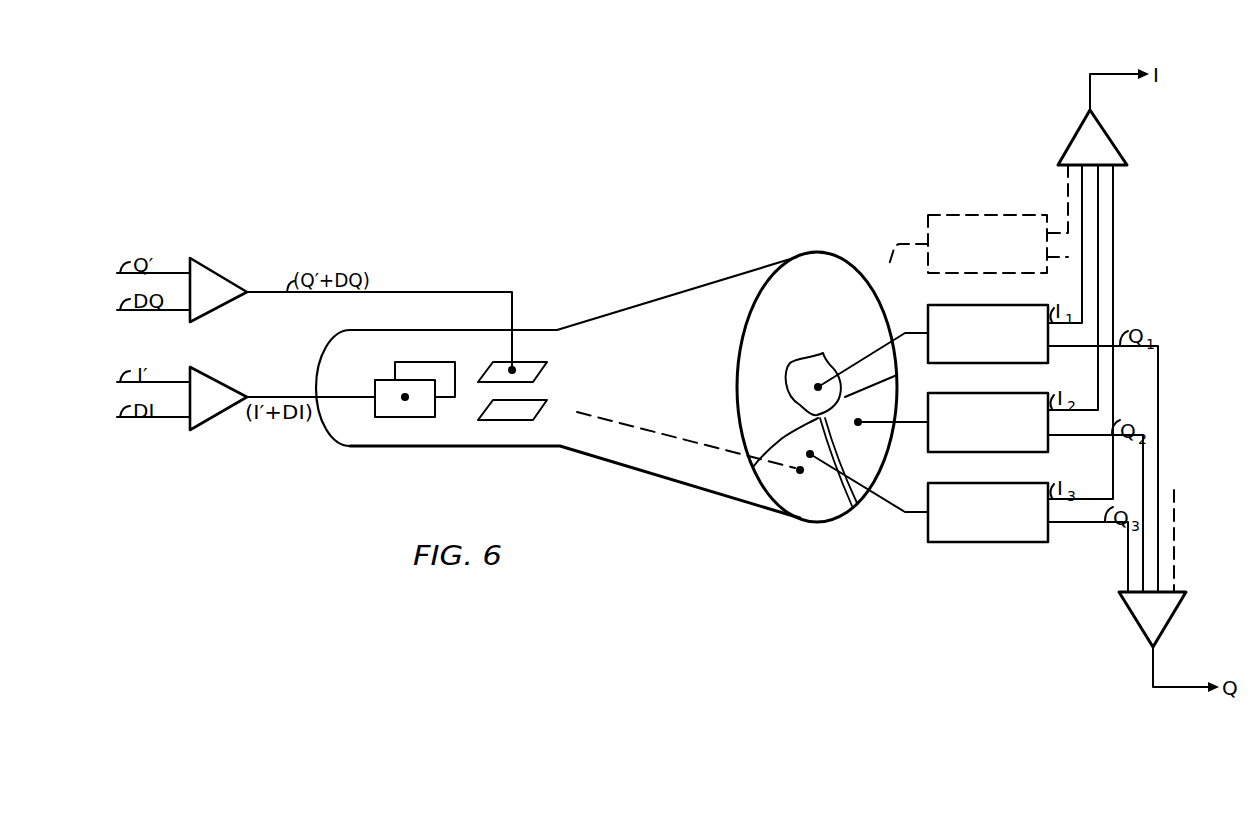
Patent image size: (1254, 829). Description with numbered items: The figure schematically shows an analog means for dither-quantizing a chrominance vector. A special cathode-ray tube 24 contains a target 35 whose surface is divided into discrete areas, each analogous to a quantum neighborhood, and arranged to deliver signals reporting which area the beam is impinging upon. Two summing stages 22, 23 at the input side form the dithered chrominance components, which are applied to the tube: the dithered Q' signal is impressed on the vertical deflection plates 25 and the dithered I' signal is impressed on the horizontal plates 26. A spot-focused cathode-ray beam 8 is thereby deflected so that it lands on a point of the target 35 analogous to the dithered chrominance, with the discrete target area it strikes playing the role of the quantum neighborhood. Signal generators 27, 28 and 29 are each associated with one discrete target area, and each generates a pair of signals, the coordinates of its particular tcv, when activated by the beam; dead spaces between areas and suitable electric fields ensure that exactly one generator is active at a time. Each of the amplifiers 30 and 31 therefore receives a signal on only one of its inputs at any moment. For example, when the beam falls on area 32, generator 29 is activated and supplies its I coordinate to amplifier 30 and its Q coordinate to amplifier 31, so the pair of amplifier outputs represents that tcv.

The cathode-ray beam 8 is at (655, 433).
The summing amplifier 22 is at (219, 270).
The summing amplifier 23 is at (222, 381).
The special cathode-ray tube 24 is at (675, 293).
The vertical deflection plates 25 is at (528, 368).
The horizontal deflection plates 26 is at (408, 410).
The signal generator 27 is at (941, 305).
The signal generator 28 is at (941, 393).
The signal generator 29 is at (941, 483).
The amplifier 30 is at (1112, 129).
The amplifier 31 is at (1182, 605).
The target area 32 is at (823, 503).
The target 35 is at (828, 275).